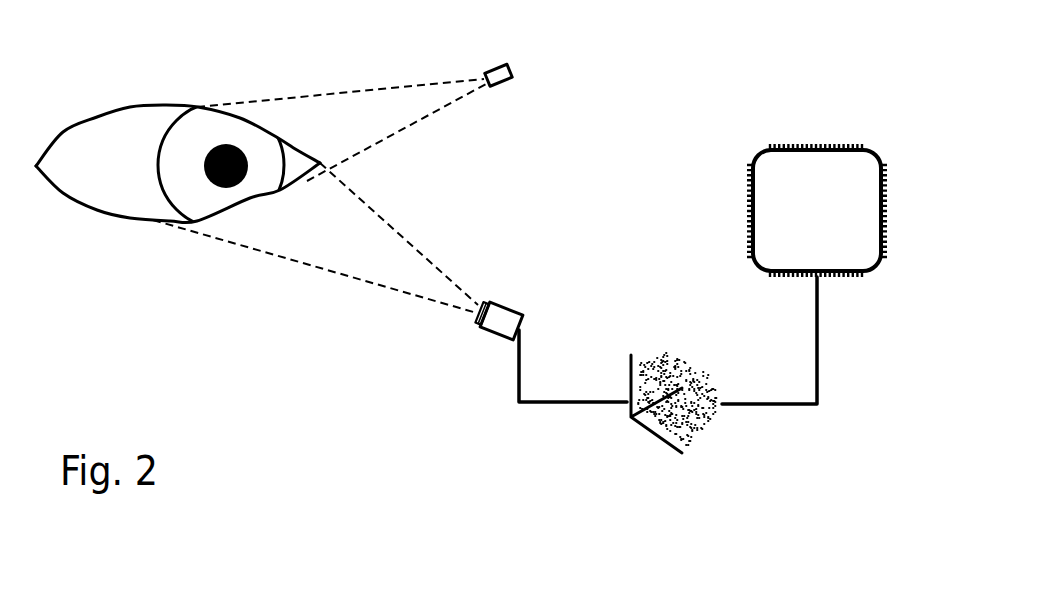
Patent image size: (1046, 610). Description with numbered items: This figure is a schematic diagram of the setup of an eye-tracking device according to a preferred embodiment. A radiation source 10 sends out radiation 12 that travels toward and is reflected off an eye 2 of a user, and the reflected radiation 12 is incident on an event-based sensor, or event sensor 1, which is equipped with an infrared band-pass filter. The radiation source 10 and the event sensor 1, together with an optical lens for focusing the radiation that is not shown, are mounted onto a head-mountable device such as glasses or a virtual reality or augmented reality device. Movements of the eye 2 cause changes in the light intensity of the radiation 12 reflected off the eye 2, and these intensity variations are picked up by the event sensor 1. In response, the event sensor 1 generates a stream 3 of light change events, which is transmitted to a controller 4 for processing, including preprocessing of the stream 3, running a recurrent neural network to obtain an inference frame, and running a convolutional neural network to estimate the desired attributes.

The event sensor 1 is at (503, 322).
The eye 2 is at (103, 117).
The stream of light change events 3 is at (638, 435).
The controller 4 is at (833, 178).
The radiation source 10 is at (497, 76).
The radiation 12 is at (317, 93).